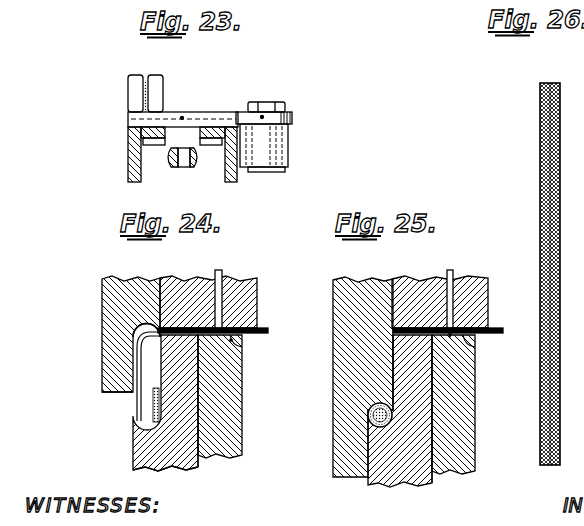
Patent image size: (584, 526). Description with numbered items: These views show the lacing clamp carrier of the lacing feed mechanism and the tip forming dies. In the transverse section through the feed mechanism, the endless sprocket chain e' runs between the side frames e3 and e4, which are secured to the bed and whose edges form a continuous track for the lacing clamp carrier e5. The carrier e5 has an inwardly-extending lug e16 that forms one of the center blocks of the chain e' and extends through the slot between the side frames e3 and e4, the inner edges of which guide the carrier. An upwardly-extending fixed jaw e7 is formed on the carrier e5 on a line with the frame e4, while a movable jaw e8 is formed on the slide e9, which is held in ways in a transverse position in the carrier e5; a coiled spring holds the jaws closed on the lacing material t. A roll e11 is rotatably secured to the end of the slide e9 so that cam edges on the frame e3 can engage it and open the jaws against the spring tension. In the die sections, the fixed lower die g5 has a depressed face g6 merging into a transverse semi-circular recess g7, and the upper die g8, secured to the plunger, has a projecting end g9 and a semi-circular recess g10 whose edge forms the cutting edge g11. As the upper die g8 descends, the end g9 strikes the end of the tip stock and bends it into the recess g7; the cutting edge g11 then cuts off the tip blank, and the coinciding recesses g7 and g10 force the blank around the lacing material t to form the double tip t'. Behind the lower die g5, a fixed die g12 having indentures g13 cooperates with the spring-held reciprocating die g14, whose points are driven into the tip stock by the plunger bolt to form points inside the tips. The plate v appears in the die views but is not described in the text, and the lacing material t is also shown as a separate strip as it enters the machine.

In FIG. 23, the fixed jaw e7 is at (134, 75).
In FIG. 23, the movable jaw e8 is at (158, 75).
In FIG. 23, the lacing material t is at (124, 96).
In FIG. 24, the lacing material t is at (132, 409).
In FIG. 25, the lacing material t is at (347, 421).
In FIG. 26, the lacing material t is at (531, 274).
In FIG. 23, the lacing clamp carrier e5 is at (128, 116).
In FIG. 23, the side frame e4 is at (128, 163).
In FIG. 23, the side frame e3 is at (237, 181).
In FIG. 23, the inwardly-extending lug e16 is at (185, 140).
In FIG. 23, the endless sprocket chain e' is at (182, 176).
In FIG. 23, the slide e9 is at (292, 119).
In FIG. 23, the roll e11 is at (270, 145).
In FIG. 24, the upper die g8 is at (102, 320).
In FIG. 24, the semi-circular recess g10 is at (150, 320).
In FIG. 25, the semi-circular recess g10 is at (371, 403).
In FIG. 24, the reciprocating die g14 is at (221, 272).
In FIG. 25, the reciprocating die g14 is at (451, 272).
In FIG. 24, the plate v is at (266, 329).
In FIG. 25, the plate v is at (498, 329).
In FIG. 24, the cutting edge g11 is at (138, 333).
In FIG. 25, the cutting edge g11 is at (393, 412).
In FIG. 24, the semi-circular recess g7 is at (137, 440).
In FIG. 25, the semi-circular recess g7 is at (383, 428).
In FIG. 24, the fixed lower die g5 is at (136, 458).
In FIG. 24, the projecting end g9 is at (108, 396).
In FIG. 25, the projecting end g9 is at (340, 481).
In FIG. 24, the fixed die g12 is at (230, 437).
In FIG. 25, the fixed die g12 is at (467, 460).
In FIG. 24, the indenture g13 is at (233, 343).
In FIG. 25, the indenture g13 is at (466, 342).
In FIG. 24, the depressed face g6 is at (162, 378).
In FIG. 25, the depressed face g6 is at (395, 383).
In FIG. 25, the double tip t' is at (348, 436).